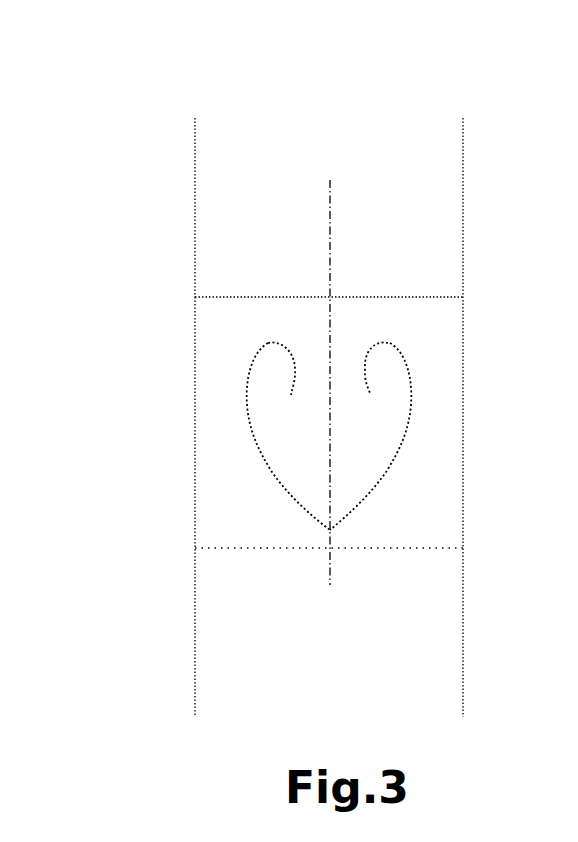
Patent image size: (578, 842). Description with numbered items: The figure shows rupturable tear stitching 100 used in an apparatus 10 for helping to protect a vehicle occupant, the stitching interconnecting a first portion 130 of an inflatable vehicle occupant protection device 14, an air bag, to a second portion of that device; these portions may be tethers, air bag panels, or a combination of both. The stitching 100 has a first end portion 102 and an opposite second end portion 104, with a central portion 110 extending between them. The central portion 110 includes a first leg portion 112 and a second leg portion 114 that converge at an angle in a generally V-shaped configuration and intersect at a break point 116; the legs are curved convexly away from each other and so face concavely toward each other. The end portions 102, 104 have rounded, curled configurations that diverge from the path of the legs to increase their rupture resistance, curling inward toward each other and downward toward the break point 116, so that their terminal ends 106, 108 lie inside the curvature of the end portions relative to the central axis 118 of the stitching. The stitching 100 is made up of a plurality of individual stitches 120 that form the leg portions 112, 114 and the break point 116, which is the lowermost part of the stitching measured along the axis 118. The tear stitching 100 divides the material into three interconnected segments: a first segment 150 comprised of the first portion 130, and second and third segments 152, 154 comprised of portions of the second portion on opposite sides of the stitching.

The apparatus 10 is at (263, 123).
The inflatable vehicle occupant protection device 14 is at (319, 99).
The tear stitching 100 is at (297, 461).
The first end portion 102 is at (229, 415).
The second end portion 104 is at (434, 415).
The terminal end 106 is at (270, 325).
The terminal end 108 is at (395, 325).
The central portion 110 is at (326, 461).
The first leg portion 112 is at (270, 472).
The second leg portion 114 is at (388, 472).
The break point 116 is at (330, 530).
The central axis 118 is at (328, 248).
The individual stitches 120 is at (230, 640).
The first portion 130 is at (440, 220).
The first segment 150 is at (438, 655).
The second segment 152 is at (434, 177).
The third segment 154 is at (390, 548).